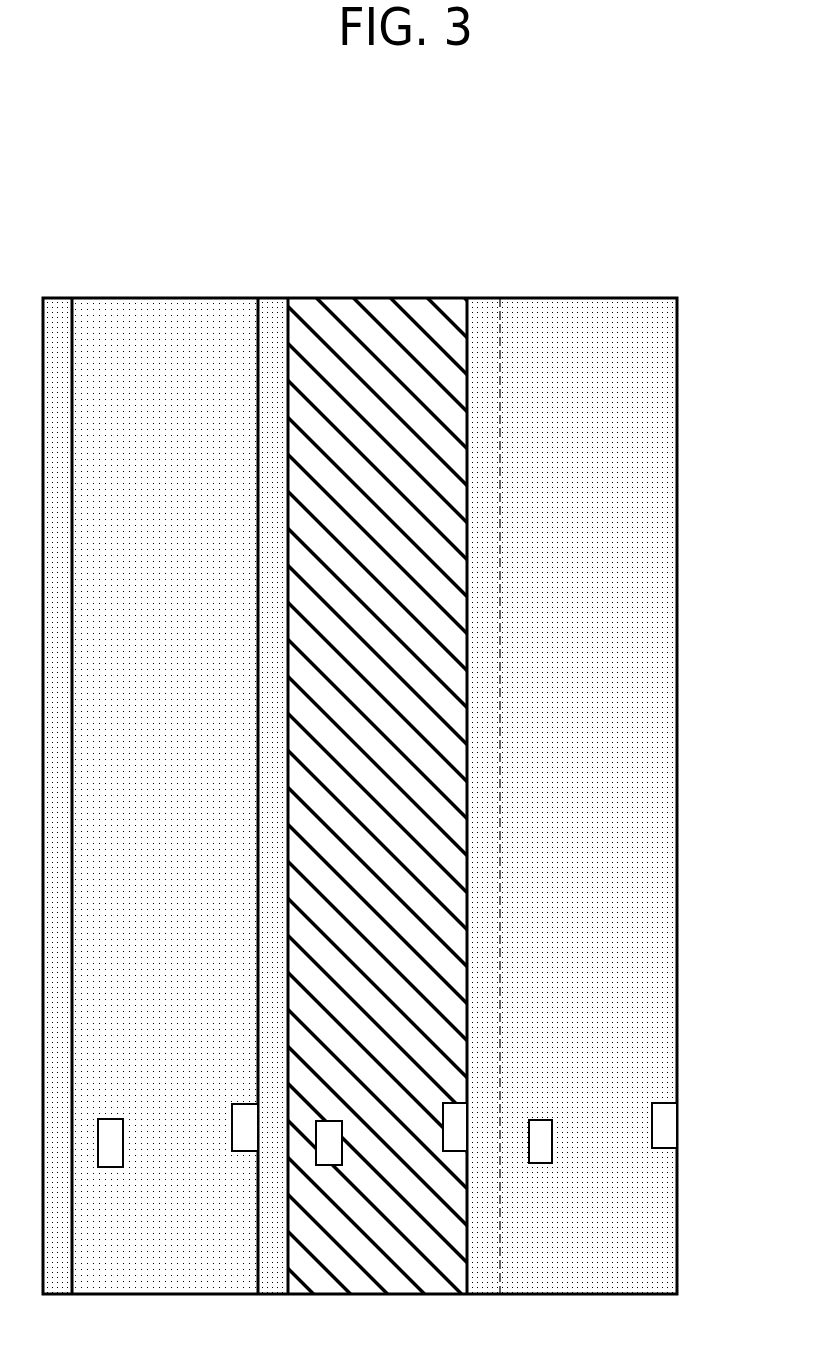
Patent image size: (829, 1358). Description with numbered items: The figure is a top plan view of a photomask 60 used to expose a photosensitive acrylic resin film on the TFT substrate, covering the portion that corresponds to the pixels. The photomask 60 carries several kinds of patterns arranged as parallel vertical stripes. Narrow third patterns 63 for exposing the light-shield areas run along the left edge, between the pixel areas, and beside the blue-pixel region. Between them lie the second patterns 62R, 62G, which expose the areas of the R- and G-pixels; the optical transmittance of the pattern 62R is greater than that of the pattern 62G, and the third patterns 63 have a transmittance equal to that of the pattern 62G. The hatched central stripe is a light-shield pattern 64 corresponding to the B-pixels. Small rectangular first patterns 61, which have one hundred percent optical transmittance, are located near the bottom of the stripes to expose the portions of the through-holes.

The photomask 60 is at (680, 142).
The first patterns 61 is at (667, 1123).
The second patterns for the R-pixels 62R is at (160, 318).
The second patterns for the G-pixels 62G is at (582, 308).
The third patterns 63 is at (58, 314).
The light-shield patterns 64 is at (376, 316).